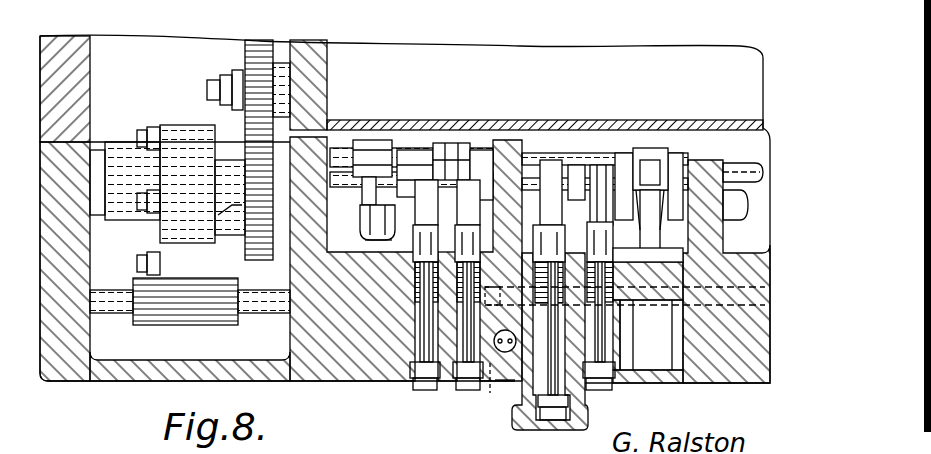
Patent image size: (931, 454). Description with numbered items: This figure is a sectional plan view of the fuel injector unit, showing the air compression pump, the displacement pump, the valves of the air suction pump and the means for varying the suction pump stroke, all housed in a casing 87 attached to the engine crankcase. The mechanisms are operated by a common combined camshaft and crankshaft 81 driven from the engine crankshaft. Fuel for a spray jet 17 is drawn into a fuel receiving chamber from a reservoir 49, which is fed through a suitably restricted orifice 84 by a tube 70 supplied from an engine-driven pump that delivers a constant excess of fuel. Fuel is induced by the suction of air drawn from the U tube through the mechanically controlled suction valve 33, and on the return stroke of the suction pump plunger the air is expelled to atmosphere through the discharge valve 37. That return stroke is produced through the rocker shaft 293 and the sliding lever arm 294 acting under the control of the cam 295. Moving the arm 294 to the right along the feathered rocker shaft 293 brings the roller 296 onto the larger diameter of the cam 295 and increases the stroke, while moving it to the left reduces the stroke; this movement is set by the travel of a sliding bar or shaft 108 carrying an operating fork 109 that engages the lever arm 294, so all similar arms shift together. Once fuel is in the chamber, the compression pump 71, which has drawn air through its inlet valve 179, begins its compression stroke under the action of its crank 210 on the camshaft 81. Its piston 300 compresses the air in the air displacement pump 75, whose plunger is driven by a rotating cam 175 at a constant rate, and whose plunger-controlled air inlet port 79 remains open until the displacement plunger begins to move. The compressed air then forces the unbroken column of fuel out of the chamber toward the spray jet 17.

The fuel spraying jet 17 is at (505, 352).
The suction valve 33 is at (467, 340).
The discharge valve 37 is at (417, 323).
The reservoir 49 is at (495, 390).
The tube 70 is at (637, 298).
The compression pump 71 is at (667, 367).
The air displacement pump 75 is at (603, 390).
The air inlet port 79 is at (620, 387).
The combined camshaft and crankshaft 81 is at (592, 172).
The restricted orifice 84 is at (420, 307).
The casing 87 is at (309, 365).
The sliding bar or shaft 108 is at (430, 172).
The operating fork 109 is at (352, 147).
The rotating cam 175 is at (550, 168).
The inlet valve 179 is at (607, 367).
The crank 210 is at (650, 227).
The rocker shaft 293 is at (412, 157).
The sliding lever arm 294 is at (360, 168).
The cam 295 is at (388, 240).
The roller 296 is at (378, 220).
The piston 300 is at (651, 335).